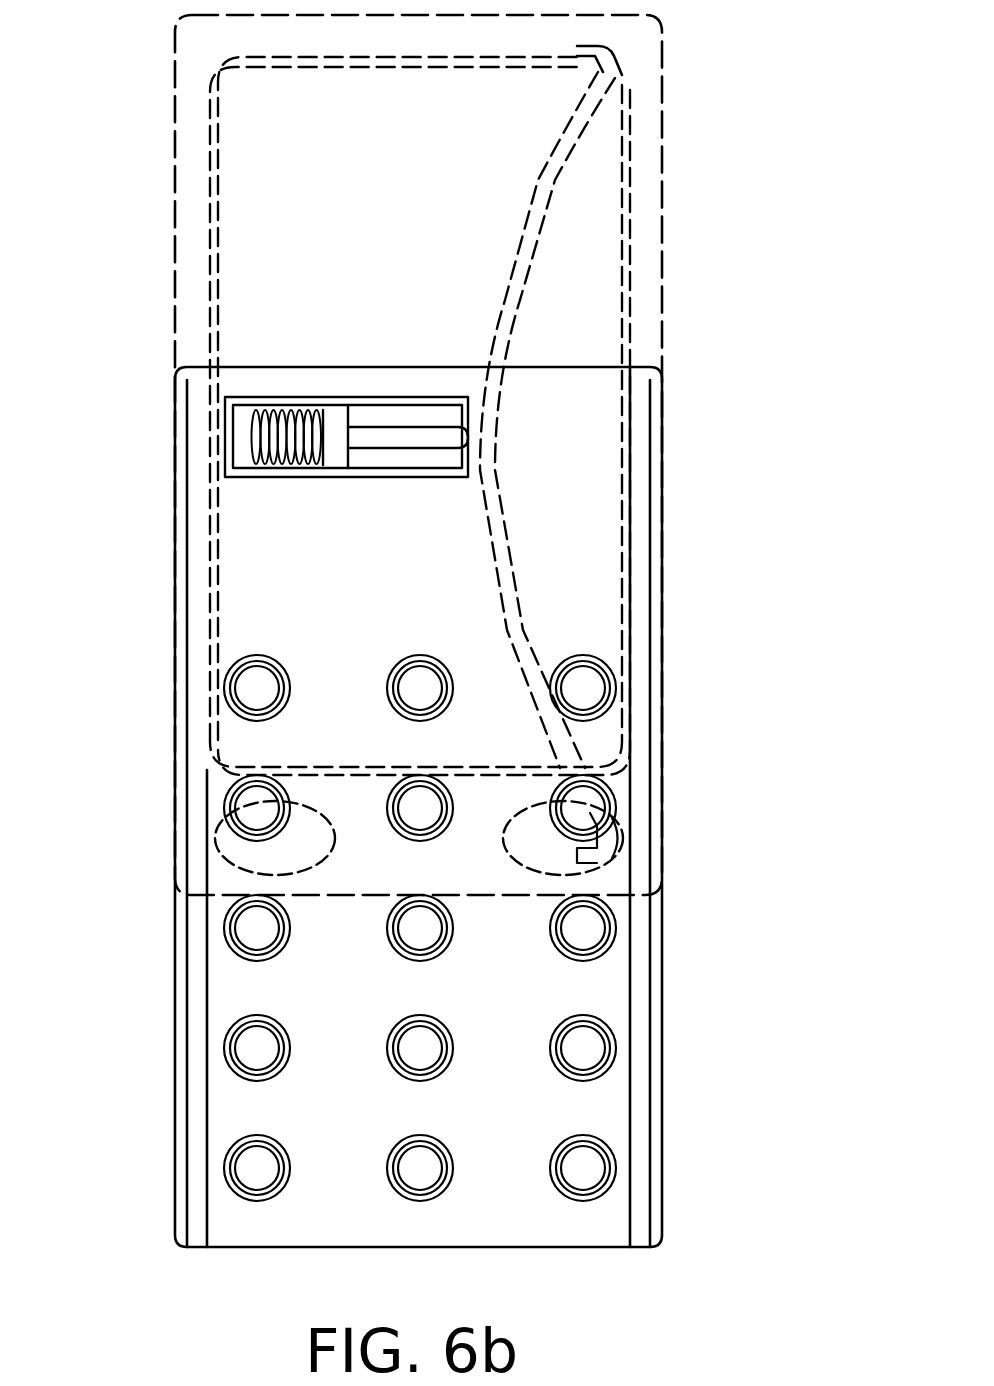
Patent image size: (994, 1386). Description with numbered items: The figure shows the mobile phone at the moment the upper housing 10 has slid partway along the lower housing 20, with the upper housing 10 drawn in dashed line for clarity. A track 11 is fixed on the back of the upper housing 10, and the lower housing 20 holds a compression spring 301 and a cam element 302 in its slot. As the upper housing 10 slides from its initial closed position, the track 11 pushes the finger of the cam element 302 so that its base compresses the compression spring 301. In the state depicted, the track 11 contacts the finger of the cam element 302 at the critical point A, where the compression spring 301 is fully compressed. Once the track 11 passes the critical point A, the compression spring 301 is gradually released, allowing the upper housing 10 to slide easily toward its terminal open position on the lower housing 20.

The upper housing 10 is at (662, 123).
The track 11 is at (530, 212).
The critical point A is at (503, 401).
The compression spring 301 is at (253, 437).
The cam element 302 is at (453, 435).
The lower housing 20 is at (662, 1045).